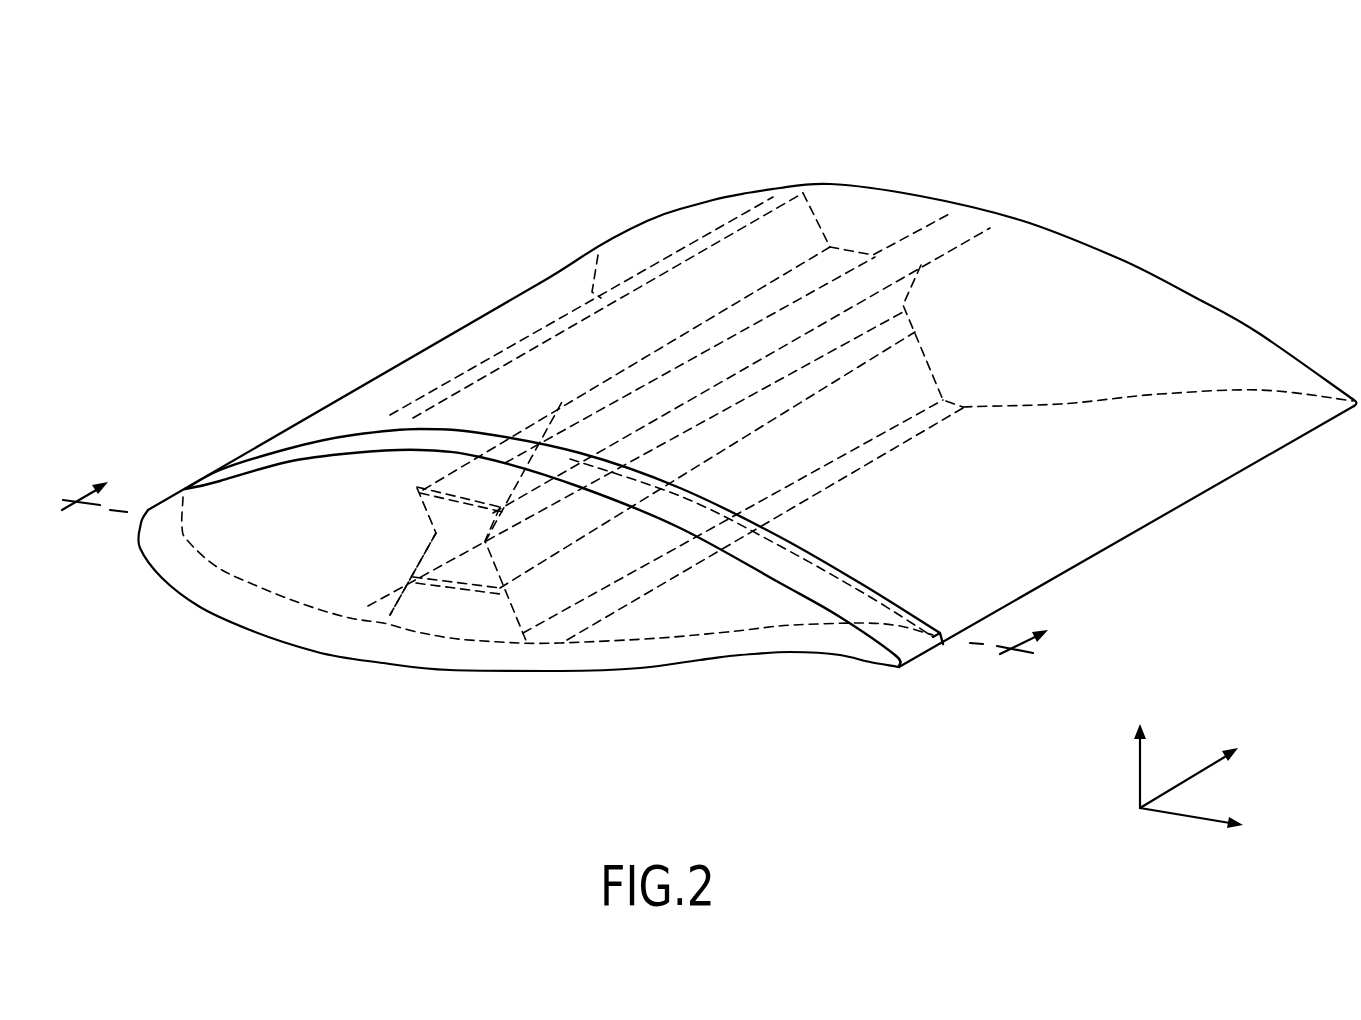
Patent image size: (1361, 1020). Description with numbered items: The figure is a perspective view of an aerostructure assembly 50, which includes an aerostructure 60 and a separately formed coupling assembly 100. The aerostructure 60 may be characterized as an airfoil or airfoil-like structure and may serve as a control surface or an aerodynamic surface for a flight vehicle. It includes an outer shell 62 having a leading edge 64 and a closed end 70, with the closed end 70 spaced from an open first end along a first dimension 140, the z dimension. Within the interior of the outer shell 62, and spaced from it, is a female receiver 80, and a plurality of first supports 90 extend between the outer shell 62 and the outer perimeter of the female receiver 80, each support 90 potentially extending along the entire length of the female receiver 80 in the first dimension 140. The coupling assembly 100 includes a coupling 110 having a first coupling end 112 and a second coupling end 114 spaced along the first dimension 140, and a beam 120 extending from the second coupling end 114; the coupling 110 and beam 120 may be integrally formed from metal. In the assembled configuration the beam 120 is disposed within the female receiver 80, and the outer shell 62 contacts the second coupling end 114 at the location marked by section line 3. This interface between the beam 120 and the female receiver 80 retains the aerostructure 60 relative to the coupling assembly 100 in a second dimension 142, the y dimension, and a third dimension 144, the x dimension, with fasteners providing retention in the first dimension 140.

The aerostructure assembly 50 is at (1004, 120).
The aerostructure 60 is at (579, 230).
The outer shell 62 is at (1080, 268).
The leading edge 64 is at (390, 370).
The closed end 70 is at (1197, 300).
The female receiver 80 is at (494, 557).
The first supports 90 is at (418, 488).
The coupling assembly 100 is at (897, 696).
The coupling 110 is at (936, 645).
The first coupling end 112 is at (759, 573).
The second coupling end 114 is at (824, 561).
The beam 120 is at (483, 538).
The first dimension 140 is at (1198, 775).
The second dimension 142 is at (1138, 770).
The third dimension 144 is at (1189, 818).
The section line 3- 3 is at (549, 579).